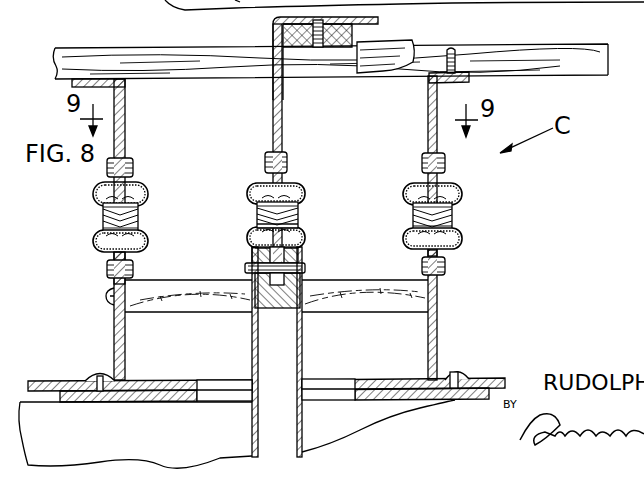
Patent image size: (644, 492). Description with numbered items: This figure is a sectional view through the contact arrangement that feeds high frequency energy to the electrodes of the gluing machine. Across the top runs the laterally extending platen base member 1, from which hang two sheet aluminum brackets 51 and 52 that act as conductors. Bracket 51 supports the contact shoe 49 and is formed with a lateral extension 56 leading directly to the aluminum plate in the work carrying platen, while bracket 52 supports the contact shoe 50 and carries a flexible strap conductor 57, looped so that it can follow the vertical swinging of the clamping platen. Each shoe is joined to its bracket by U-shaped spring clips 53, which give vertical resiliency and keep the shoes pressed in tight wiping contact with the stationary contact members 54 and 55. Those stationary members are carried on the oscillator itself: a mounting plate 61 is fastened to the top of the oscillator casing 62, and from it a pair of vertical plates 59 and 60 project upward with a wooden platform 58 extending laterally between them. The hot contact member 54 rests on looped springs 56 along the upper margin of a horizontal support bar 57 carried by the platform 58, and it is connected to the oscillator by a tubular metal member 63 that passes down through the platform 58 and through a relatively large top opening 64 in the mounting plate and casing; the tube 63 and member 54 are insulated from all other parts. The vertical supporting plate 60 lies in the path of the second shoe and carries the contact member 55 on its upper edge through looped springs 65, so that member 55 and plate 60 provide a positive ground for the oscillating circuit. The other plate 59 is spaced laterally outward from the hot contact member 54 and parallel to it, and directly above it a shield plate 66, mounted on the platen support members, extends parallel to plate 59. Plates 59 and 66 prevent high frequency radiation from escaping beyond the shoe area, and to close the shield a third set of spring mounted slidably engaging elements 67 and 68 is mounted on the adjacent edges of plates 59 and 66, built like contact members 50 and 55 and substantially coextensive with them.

The beam 1 is at (607, 60).
The contact shoe 49 is at (300, 206).
The contact shoe 50 is at (452, 208).
The bracket 51 is at (283, 120).
The bracket 52 is at (428, 115).
The U-shaped spring clips 53 is at (300, 188).
The stationary contact member 54 is at (300, 228).
The stationary contact member 55 is at (455, 220).
The lateral extension; looped springs 56 is at (380, 21).
The flexible strap conductor; horizontal support bar 57 is at (378, 73).
The wooden platform 58 is at (197, 312).
The vertical plate 59 is at (114, 329).
The vertical supporting plate 60 is at (440, 298).
The mounting plate 61 is at (494, 380).
The oscillator casing 62 is at (394, 418).
The tubular metal member 63 is at (302, 355).
The top opening 64 is at (218, 395).
The looped springs 65 is at (458, 243).
The shield plate 66 is at (126, 126).
The spring mounted slidably engaging element 67 is at (105, 226).
The spring mounted slidably engaging element 68 is at (104, 210).